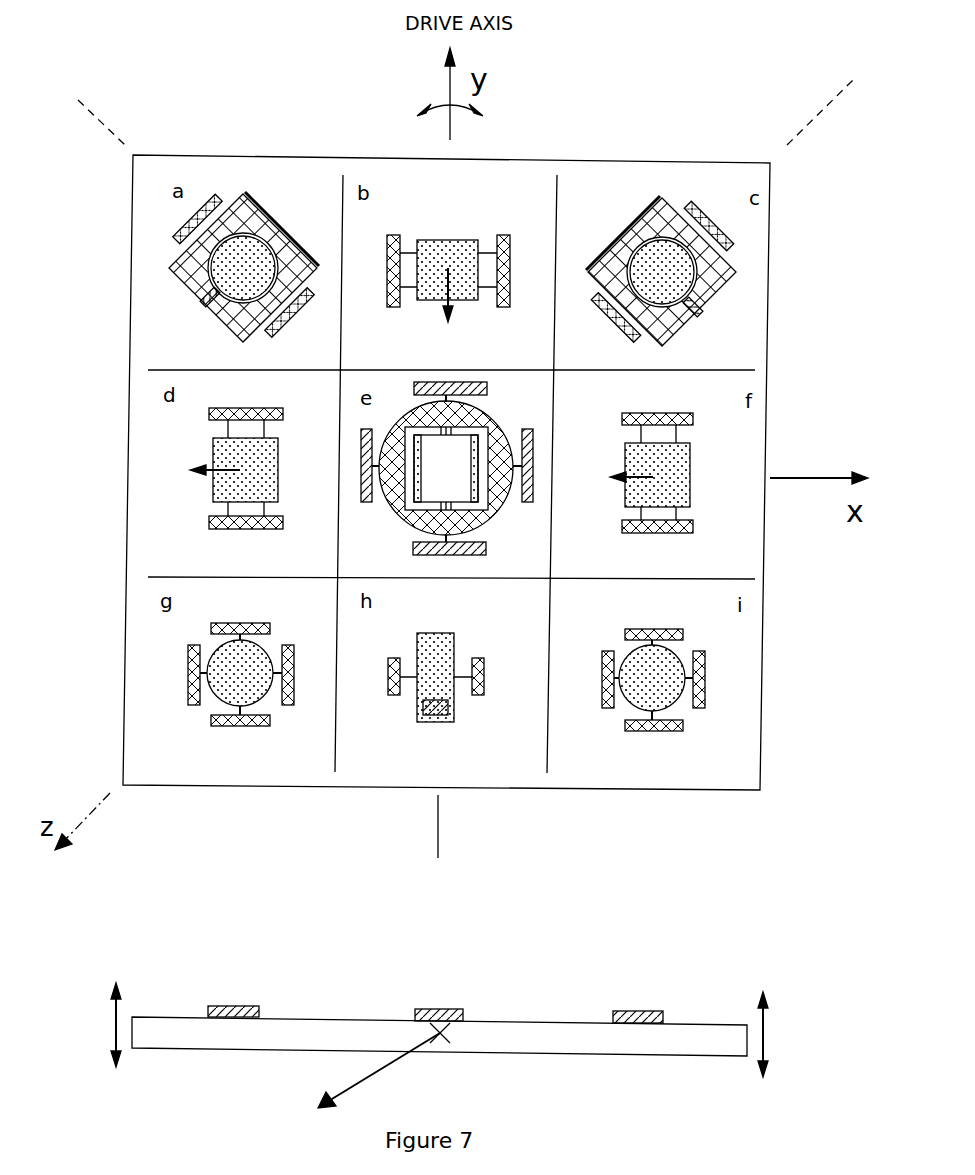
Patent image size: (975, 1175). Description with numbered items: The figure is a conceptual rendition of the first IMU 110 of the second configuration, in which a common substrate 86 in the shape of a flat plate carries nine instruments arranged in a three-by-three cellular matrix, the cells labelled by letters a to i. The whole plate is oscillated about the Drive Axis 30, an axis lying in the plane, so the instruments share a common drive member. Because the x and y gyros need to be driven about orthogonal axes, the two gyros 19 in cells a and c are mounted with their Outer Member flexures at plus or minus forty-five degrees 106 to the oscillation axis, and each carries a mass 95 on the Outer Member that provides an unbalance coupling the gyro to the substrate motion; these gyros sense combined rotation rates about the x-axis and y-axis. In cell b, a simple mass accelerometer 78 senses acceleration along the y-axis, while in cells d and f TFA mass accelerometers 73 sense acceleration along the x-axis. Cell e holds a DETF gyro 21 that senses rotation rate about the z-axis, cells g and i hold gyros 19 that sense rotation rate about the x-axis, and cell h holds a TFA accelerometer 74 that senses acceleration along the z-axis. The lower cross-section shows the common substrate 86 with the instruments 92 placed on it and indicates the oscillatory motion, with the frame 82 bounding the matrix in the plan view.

The gyros 19 is at (168, 303).
The DETF gyro 21 is at (517, 527).
The drive axis 30 is at (433, 80).
The TFA mass accelerometers 73 is at (192, 510).
The TFA accelerometer 74 is at (440, 738).
The simple mass accelerometer 78 is at (477, 218).
The substrate frame 82 is at (658, 790).
The common substrate 86 is at (522, 1020).
The instruments 92 is at (640, 1005).
The mass 95 is at (202, 303).
The Outer Member flexures at +/-45 degrees 106 is at (93, 137).
The first IMU 110 is at (731, 70).